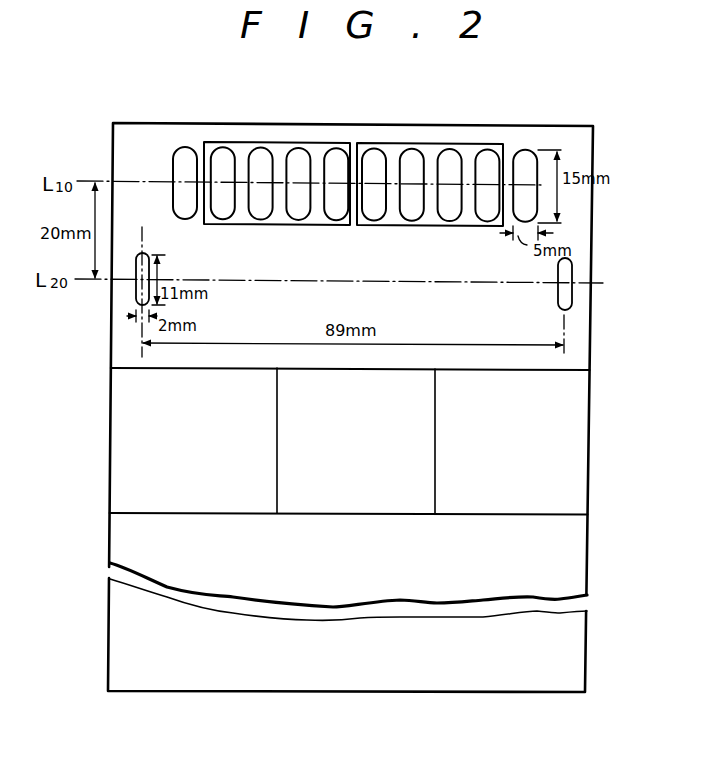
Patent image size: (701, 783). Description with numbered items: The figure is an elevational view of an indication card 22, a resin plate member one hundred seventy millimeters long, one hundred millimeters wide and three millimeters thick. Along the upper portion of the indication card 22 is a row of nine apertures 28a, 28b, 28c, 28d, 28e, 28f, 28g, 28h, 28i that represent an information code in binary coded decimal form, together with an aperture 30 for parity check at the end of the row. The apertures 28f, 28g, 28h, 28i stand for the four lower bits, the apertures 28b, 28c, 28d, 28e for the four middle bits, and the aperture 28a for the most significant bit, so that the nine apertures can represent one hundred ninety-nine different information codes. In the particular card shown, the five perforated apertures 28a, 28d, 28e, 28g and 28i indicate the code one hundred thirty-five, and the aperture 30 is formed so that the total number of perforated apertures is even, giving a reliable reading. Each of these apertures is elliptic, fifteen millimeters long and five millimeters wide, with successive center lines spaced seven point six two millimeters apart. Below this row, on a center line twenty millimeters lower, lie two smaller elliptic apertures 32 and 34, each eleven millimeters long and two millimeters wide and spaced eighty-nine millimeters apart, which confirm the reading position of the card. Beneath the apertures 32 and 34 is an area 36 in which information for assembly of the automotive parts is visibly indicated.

The indication card 22 is at (593, 437).
The aperture 28a is at (183, 147).
The aperture 28b is at (219, 220).
The aperture 28c is at (256, 220).
The aperture 28d is at (290, 148).
The aperture 28e is at (331, 148).
The aperture 28f is at (366, 220).
The aperture 28g is at (410, 149).
The aperture 28h is at (461, 221).
The aperture 28i is at (487, 150).
The aperture for parity check 30 is at (527, 150).
The aperture for confirmation of reading position 32 is at (136, 297).
The aperture for confirmation of reading position 34 is at (572, 263).
The area 36 is at (498, 487).